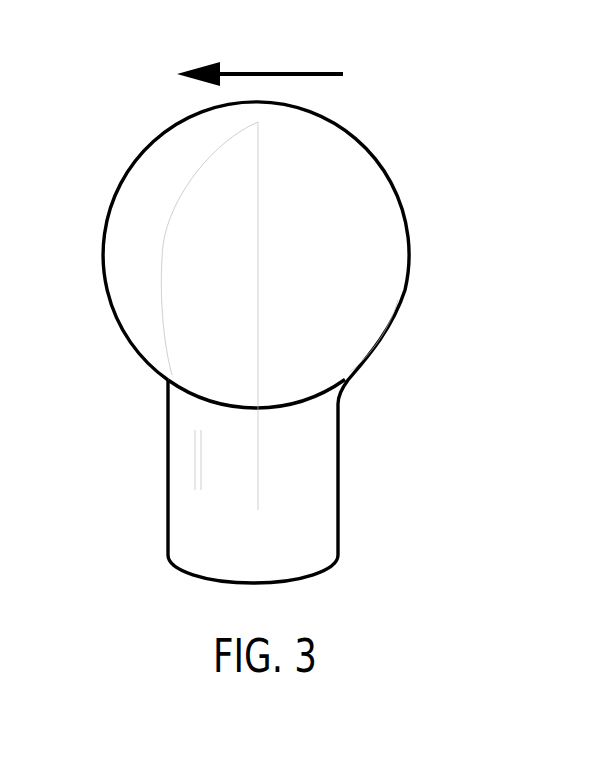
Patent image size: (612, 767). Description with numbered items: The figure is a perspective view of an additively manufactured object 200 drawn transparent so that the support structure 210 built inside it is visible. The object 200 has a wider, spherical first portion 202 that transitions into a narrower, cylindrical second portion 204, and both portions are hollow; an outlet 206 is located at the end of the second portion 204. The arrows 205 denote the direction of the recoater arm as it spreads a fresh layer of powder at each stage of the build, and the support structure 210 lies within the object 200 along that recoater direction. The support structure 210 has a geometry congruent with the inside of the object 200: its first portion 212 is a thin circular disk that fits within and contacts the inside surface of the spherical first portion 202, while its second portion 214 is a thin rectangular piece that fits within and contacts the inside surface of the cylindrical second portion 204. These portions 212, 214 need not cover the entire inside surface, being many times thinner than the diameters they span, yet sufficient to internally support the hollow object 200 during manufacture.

The object 200 is at (118, 208).
The first portion 202 is at (385, 309).
The second portion 204 is at (337, 498).
The arrows 205 is at (283, 72).
The outlet 206 is at (297, 556).
The support structure 210 is at (368, 264).
The first portion 212 is at (143, 289).
The second portion 214 is at (202, 490).